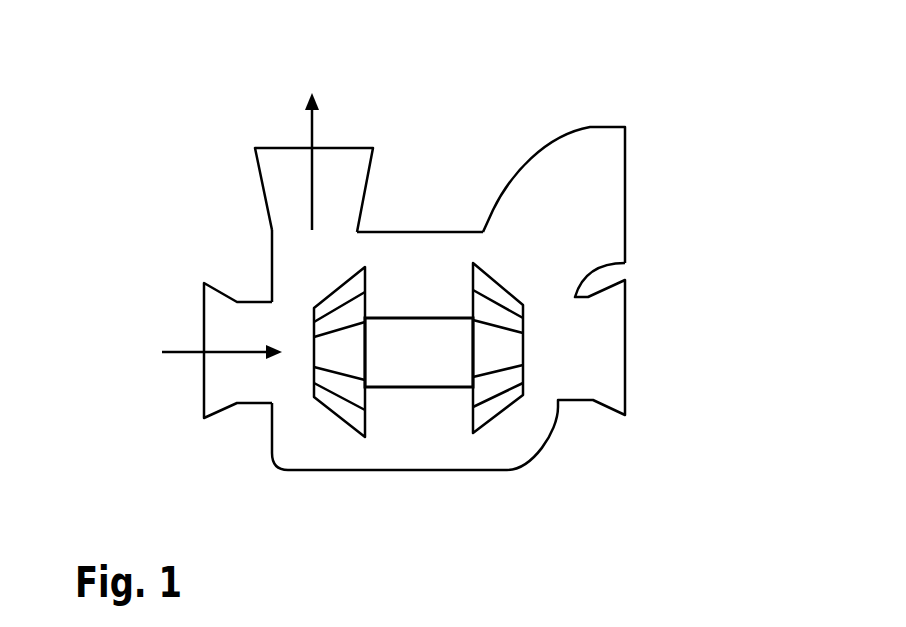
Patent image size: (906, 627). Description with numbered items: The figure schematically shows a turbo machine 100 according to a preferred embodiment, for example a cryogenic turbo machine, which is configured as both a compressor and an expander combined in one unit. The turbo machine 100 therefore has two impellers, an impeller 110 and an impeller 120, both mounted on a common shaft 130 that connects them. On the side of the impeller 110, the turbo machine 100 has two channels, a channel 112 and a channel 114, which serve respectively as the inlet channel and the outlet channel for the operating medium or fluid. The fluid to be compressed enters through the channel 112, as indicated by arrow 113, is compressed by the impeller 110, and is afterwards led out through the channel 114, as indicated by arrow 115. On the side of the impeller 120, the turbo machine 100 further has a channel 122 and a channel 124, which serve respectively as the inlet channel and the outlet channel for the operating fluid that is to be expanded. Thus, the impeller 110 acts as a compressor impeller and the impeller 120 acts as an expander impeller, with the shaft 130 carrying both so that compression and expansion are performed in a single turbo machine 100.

The turbo machine 100 is at (148, 105).
The impeller 110 is at (340, 420).
The channel 112 is at (164, 305).
The arrow 113 is at (192, 352).
The channel 114 is at (263, 78).
The arrow 115 is at (312, 162).
The impeller 120 is at (490, 413).
The channel 122 is at (660, 200).
The channel 124 is at (660, 363).
The shaft 130 is at (418, 388).